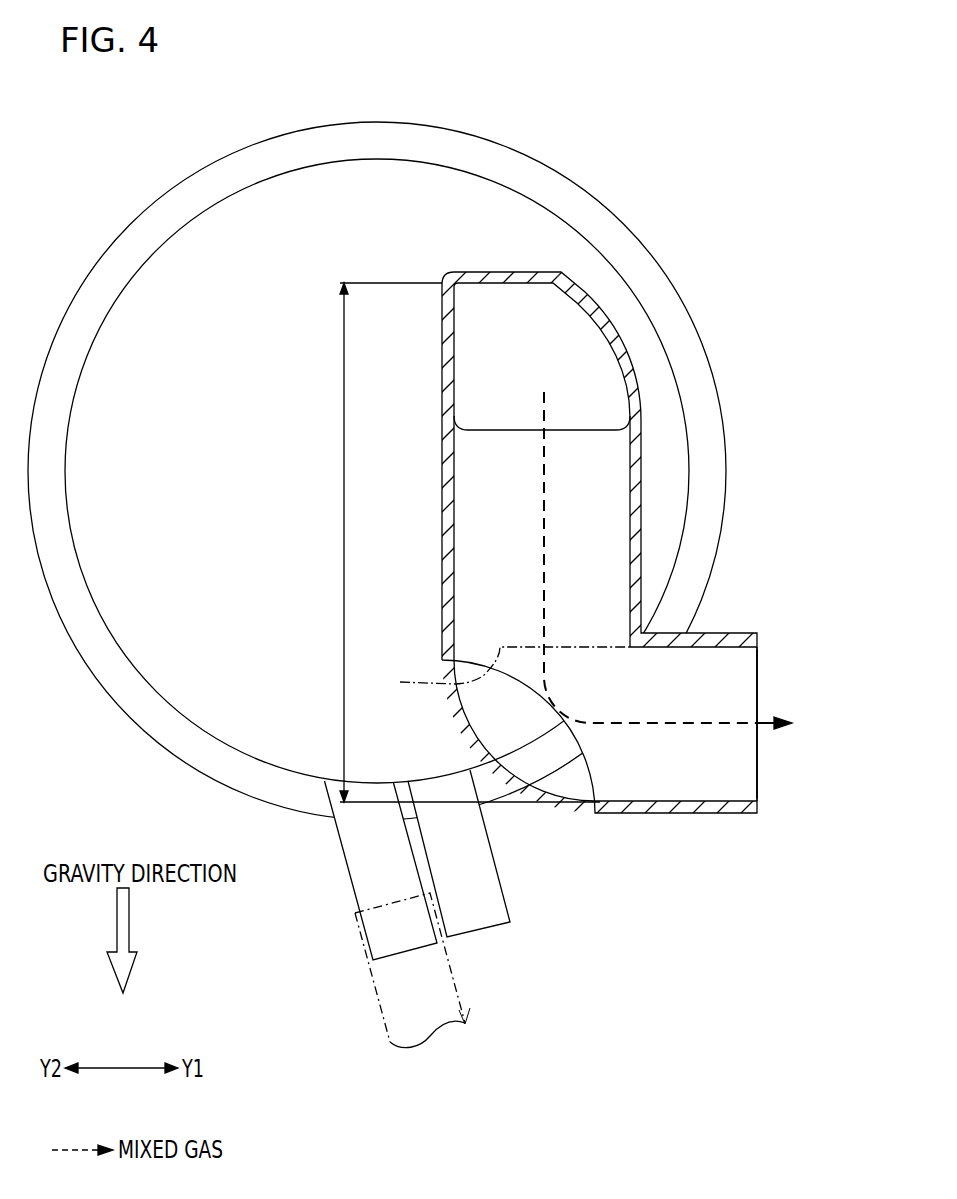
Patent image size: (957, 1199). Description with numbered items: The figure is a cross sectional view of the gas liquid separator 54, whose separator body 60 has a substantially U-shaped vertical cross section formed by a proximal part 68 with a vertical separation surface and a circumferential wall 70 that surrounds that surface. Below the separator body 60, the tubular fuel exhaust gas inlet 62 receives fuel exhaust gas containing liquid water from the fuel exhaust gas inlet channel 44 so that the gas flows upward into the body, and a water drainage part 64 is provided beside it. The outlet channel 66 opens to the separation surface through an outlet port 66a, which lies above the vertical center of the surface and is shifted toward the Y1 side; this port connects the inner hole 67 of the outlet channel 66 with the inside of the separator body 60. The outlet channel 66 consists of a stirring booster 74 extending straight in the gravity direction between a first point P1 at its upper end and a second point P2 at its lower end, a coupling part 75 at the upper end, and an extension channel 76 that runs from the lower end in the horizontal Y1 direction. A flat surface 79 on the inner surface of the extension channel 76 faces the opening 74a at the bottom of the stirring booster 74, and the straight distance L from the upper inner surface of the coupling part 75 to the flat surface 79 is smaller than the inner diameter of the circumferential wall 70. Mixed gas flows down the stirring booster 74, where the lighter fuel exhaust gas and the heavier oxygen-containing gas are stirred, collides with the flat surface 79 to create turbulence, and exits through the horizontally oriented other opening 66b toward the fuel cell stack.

The gas liquid separator 54 is at (122, 128).
The separator body 60 is at (553, 171).
The fuel exhaust gas inlet 62 is at (370, 883).
The water drainage part 64 is at (494, 890).
The outlet channel 66 is at (728, 633).
The outlet port 66a is at (495, 358).
The other opening 66b is at (757, 784).
The inner hole 67 is at (685, 783).
The proximal part 68 is at (283, 216).
The circumferential wall 70 is at (462, 146).
The stirring booster 74 is at (447, 489).
The opening 74a is at (495, 671).
The coupling part 75 is at (510, 276).
The extension channel 76 is at (743, 814).
The flat surface 79 is at (600, 793).
The fuel exhaust gas inlet channel 44 is at (378, 998).
The first point P1 is at (488, 428).
The second point P2 is at (636, 648).
The straight distance L is at (463, 542).